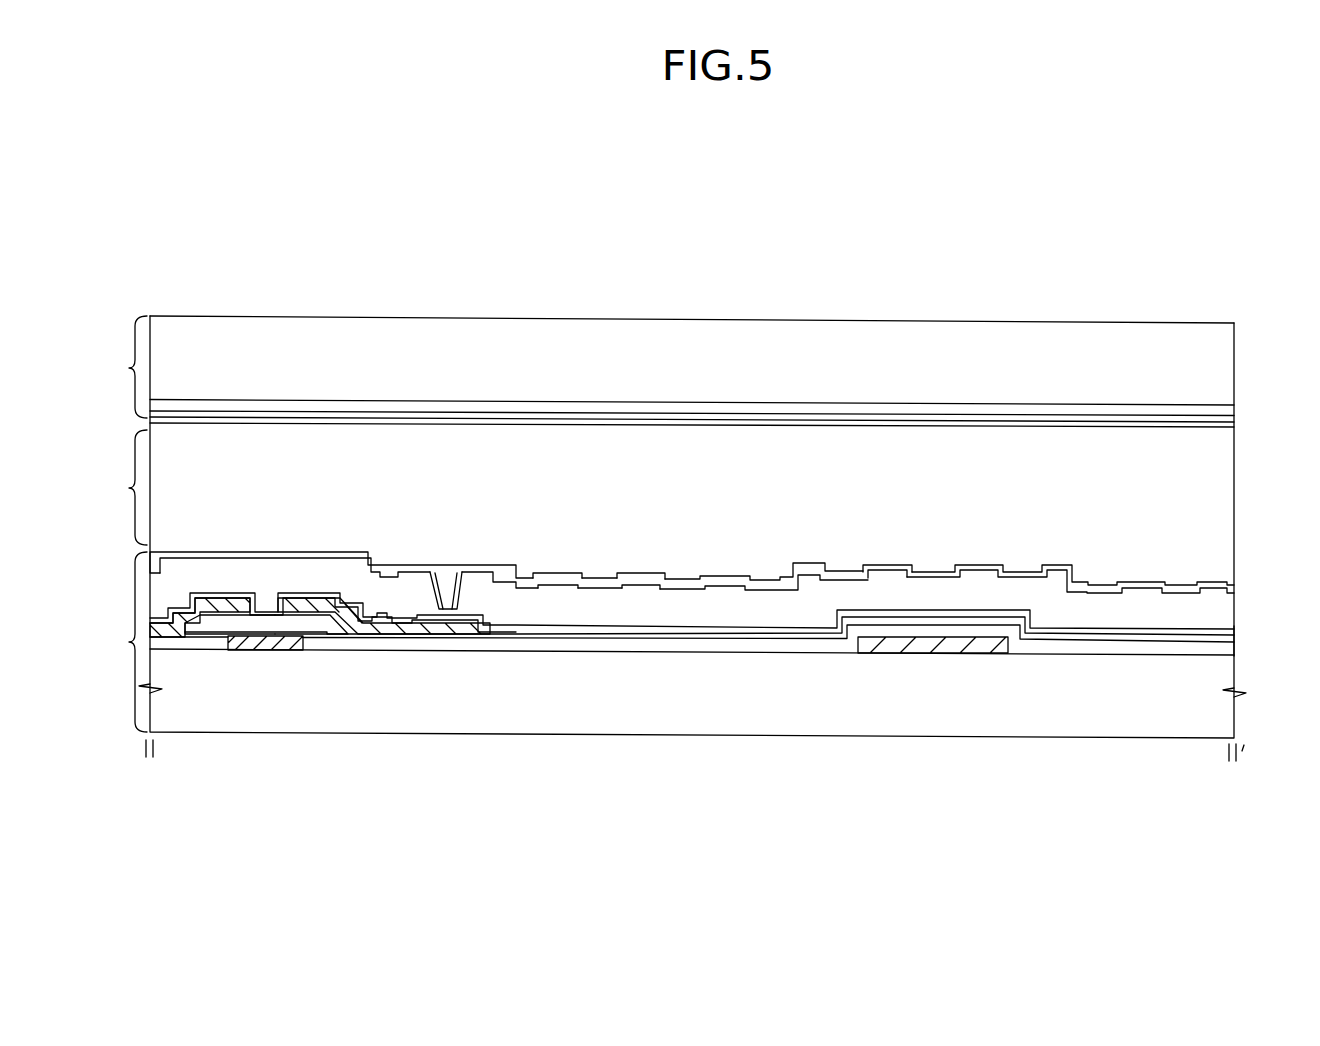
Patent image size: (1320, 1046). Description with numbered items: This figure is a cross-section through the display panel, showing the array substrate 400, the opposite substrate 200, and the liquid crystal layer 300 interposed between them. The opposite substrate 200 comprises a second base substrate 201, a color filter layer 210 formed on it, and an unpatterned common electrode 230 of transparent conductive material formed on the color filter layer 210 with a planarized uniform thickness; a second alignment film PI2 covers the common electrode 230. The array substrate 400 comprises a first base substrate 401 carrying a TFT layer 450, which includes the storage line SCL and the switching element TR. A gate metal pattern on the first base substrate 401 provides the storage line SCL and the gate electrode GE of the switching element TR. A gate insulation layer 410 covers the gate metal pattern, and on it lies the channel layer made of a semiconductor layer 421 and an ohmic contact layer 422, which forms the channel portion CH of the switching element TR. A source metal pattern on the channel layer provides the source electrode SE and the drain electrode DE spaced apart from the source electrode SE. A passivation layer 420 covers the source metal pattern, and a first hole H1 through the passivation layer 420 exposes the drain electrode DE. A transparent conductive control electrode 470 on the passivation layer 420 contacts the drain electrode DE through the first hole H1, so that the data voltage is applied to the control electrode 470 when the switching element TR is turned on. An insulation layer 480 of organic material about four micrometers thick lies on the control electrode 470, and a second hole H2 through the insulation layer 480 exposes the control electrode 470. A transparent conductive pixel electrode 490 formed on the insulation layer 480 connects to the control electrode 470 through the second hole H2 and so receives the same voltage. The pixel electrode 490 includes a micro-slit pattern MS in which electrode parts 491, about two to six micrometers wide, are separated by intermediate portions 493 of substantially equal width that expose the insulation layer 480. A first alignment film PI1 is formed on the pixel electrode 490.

The opposite substrate 200 is at (119, 367).
The second base substrate 201 is at (1225, 362).
The color filter layer 210 is at (1225, 410).
The common electrode 230 is at (1233, 420).
The second alignment film PI2 is at (1233, 427).
The liquid crystal layer 300 is at (119, 487).
The array substrate 400 is at (119, 642).
The first base substrate 401 is at (748, 705).
The gate insulation layer 410 is at (668, 645).
The passivation layer 420 is at (590, 634).
The control electrode 470 is at (826, 629).
The insulation layer 480 is at (1128, 614).
The first alignment film PI1 is at (1225, 585).
The TFT layer 450 is at (1237, 628).
The pixel electrode 490 is at (887, 572).
The micro-slit pattern MS is at (599, 524).
The electrode part 491 is at (558, 587).
The intermediate portion 493 is at (628, 546).
The first hole H1 is at (446, 593).
The second hole H2 is at (456, 612).
The switching element TR is at (320, 741).
The source electrode SE is at (170, 633).
The gate electrode GE is at (263, 643).
The drain electrode DE is at (384, 718).
The channel portion CH is at (282, 726).
The semiconductor layer 421 is at (327, 636).
The ohmic contact layer 422 is at (343, 634).
The storage line SCL is at (937, 646).